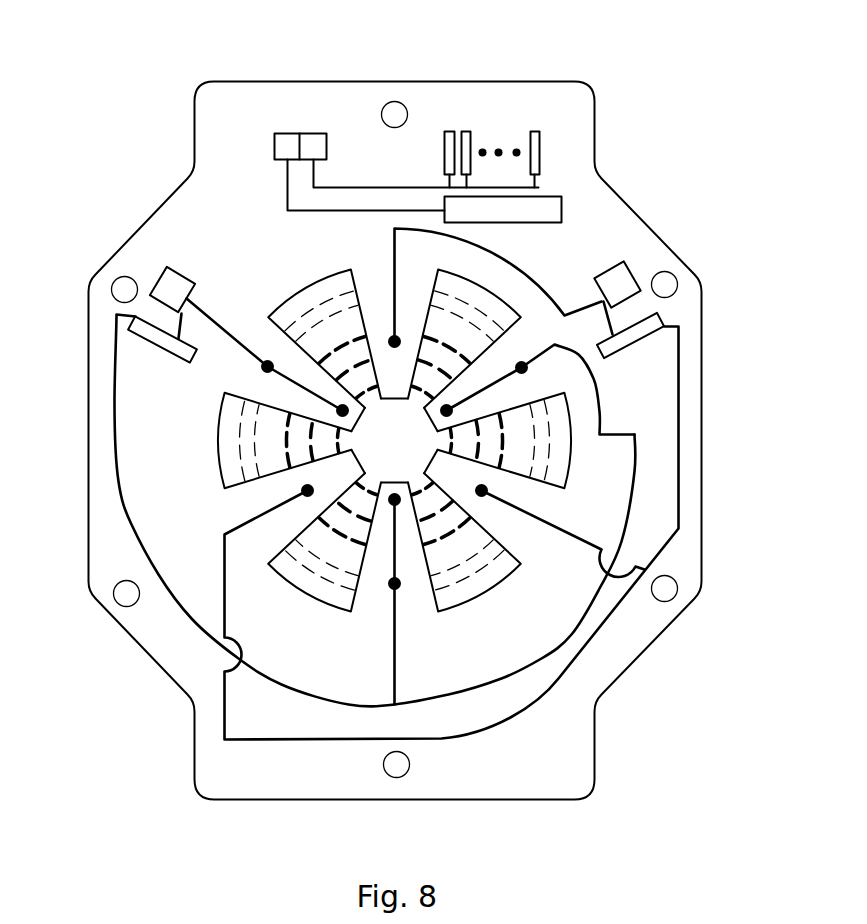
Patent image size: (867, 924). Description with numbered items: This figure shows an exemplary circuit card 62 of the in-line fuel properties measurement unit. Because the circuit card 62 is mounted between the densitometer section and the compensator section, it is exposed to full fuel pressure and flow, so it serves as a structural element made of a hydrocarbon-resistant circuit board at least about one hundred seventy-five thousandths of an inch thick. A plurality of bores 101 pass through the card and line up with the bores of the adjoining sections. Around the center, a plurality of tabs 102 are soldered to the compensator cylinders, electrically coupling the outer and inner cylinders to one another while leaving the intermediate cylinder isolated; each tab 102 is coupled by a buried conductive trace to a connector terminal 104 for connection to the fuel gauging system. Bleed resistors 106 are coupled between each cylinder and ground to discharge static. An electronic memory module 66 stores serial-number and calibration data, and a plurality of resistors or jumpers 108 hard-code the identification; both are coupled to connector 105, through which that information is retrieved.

The circuit card 62 is at (135, 125).
The electronic memory module 66 is at (567, 192).
The bores 101 is at (123, 590).
The tabs 102 is at (290, 402).
The connector terminal 104 is at (152, 280).
The connector 105 is at (325, 138).
The bleed resistors 106 is at (152, 350).
The resistors or jumpers 108 is at (547, 145).